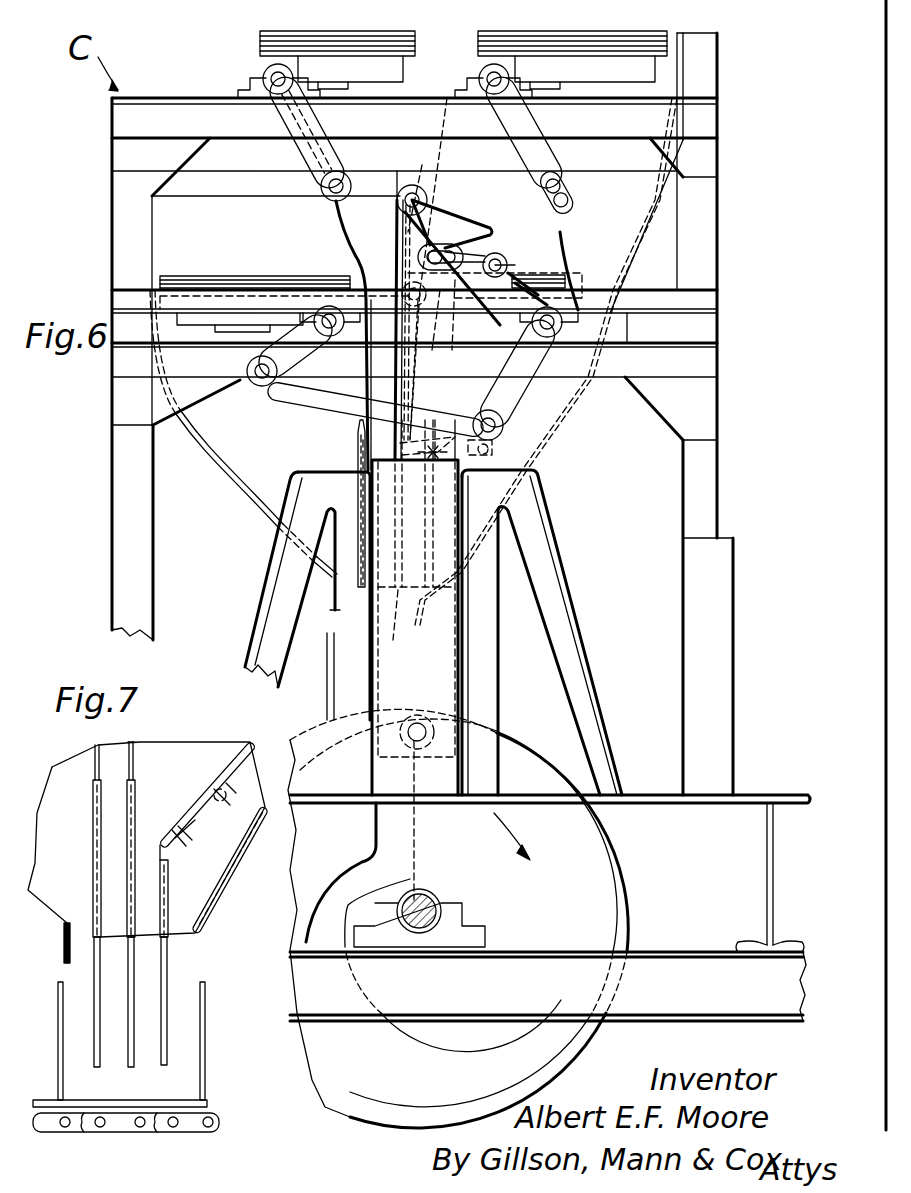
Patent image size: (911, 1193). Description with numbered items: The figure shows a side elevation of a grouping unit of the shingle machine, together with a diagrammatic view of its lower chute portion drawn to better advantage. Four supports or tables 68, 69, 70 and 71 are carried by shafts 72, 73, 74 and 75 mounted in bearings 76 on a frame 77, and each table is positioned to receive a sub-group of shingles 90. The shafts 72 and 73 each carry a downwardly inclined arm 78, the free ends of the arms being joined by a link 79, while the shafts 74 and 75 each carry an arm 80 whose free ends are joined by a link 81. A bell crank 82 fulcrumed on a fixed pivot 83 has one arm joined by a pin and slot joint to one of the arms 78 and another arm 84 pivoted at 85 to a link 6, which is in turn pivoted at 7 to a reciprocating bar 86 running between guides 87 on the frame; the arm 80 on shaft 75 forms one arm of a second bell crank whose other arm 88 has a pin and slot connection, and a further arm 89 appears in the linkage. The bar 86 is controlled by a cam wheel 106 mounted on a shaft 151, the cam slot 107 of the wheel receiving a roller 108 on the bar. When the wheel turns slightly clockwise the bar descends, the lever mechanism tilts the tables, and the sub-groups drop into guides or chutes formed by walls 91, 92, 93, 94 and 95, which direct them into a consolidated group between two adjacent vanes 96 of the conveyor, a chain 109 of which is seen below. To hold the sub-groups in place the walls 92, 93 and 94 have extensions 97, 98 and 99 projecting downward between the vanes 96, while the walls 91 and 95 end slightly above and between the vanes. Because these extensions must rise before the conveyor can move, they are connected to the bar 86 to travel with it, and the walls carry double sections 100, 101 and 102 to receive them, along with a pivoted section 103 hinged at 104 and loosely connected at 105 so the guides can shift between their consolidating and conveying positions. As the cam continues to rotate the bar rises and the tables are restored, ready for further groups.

In FIG. 6, the link 6 is at (398, 240).
In FIG. 6, the pivot 7 is at (392, 285).
In FIG. 6, the support or table 68 is at (350, 72).
In FIG. 6, the support or table 69 is at (585, 72).
In FIG. 6, the support or table 70 is at (218, 325).
In FIG. 6, the support or table 71 is at (445, 335).
In FIG. 6, the shaft 72 is at (270, 72).
In FIG. 6, the shaft 73 is at (490, 72).
In FIG. 6, the shaft 74 is at (328, 305).
In FIG. 6, the shaft 75 is at (568, 287).
In FIG. 6, the bearings 76 is at (248, 92).
In FIG. 6, the frame 77 is at (128, 488).
In FIG. 6, the downwardly inclined arm 78 is at (305, 150).
In FIG. 6, the link 79 is at (384, 176).
In FIG. 6, the arm 80 is at (296, 395).
In FIG. 6, the link 81 is at (330, 400).
In FIG. 6, the bell crank 82 is at (470, 250).
In FIG. 6, the fixed pivot 83 is at (508, 265).
In FIG. 6, the arm 84 is at (450, 210).
In FIG. 6, the pivot 85 is at (413, 185).
In FIG. 6, the reciprocating bar 86 is at (455, 370).
In FIG. 6, the guides 87 is at (336, 622).
In FIG. 6, the arm 88 is at (572, 268).
In FIG. 6, the arm 89 is at (456, 242).
In FIG. 6, the sub-groups of shingles 90 is at (350, 40).
In FIG. 6, the wall 91 is at (225, 468).
In FIG. 7, the wall 91 is at (62, 930).
In FIG. 6, the wall 92 is at (345, 228).
In FIG. 7, the wall 92 is at (94, 760).
In FIG. 6, the wall 93 is at (400, 365).
In FIG. 7, the wall 93 is at (134, 752).
In FIG. 6, the wall 94 is at (560, 430).
In FIG. 7, the wall 94 is at (230, 785).
In FIG. 6, the wall 95 is at (530, 430).
In FIG. 7, the wall 95 is at (215, 890).
In FIG. 7, the vanes 96 is at (58, 1018).
In FIG. 6, the extension 97 is at (357, 460).
In FIG. 6, the extension 98 is at (398, 595).
In FIG. 7, the extension 98 is at (128, 1030).
In FIG. 6, the extension 99 is at (425, 505).
In FIG. 7, the extension 99 is at (164, 995).
In FIG. 6, the double section 100 is at (357, 450).
In FIG. 7, the double section 100 is at (92, 880).
In FIG. 6, the double section 101 is at (398, 412).
In FIG. 7, the double section 101 is at (136, 840).
In FIG. 6, the double section 102 is at (415, 627).
In FIG. 7, the double section 102 is at (160, 872).
In FIG. 6, the pivoted section 103 is at (438, 435).
In FIG. 7, the pivoted section 103 is at (192, 810).
In FIG. 6, the hinge 104 is at (500, 445).
In FIG. 7, the hinge 104 is at (222, 800).
In FIG. 6, the loose connection 105 is at (463, 478).
In FIG. 7, the loose connection 105 is at (185, 845).
In FIG. 6, the cam wheel 106 is at (458, 913).
In FIG. 6, the cam slot 107 is at (605, 875).
In FIG. 6, the roller 108 is at (420, 716).
In FIG. 7, the chain 109 is at (122, 1130).
In FIG. 6, the shaft 151 is at (430, 900).